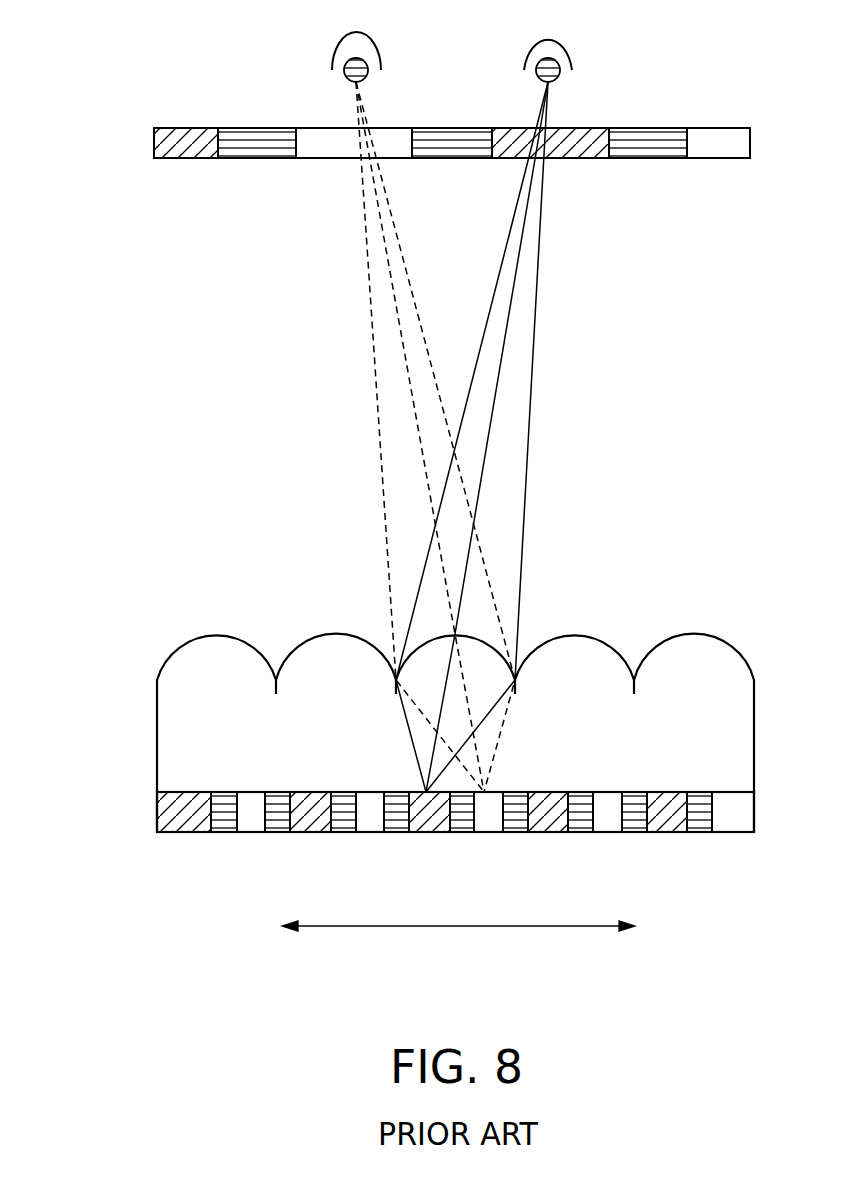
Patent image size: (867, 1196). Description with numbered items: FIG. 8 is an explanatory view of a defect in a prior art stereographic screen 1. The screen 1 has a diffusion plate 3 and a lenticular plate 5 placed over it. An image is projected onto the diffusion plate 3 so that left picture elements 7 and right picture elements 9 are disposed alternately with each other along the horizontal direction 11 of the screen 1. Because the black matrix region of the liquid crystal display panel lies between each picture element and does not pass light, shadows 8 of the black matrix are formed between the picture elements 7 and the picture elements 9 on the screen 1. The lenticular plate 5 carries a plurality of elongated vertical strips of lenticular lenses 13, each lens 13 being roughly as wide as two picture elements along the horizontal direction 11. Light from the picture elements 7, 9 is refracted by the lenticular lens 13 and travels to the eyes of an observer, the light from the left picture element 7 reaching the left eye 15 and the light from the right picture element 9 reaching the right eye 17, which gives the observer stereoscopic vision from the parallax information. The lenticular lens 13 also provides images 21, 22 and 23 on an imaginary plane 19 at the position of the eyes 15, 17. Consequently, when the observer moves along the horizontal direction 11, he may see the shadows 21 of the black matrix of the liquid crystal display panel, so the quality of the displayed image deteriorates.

The screen 1 is at (433, 744).
The diffusion plate 3 is at (493, 852).
The lenticular plate 5 is at (483, 703).
The left picture elements 7 is at (428, 822).
The shadows of the black matrix 8 is at (463, 822).
The right picture elements 9 is at (488, 822).
The horizontal direction 11 is at (465, 928).
The lenticular lens 13 is at (209, 632).
The left eye 15 is at (558, 62).
The right eye 17 is at (346, 63).
The imaginary plane 19 is at (494, 109).
The image of the shadows of the black matrix 21 is at (456, 138).
The image of picture elements 22 is at (527, 138).
The image of picture elements 23 is at (326, 138).